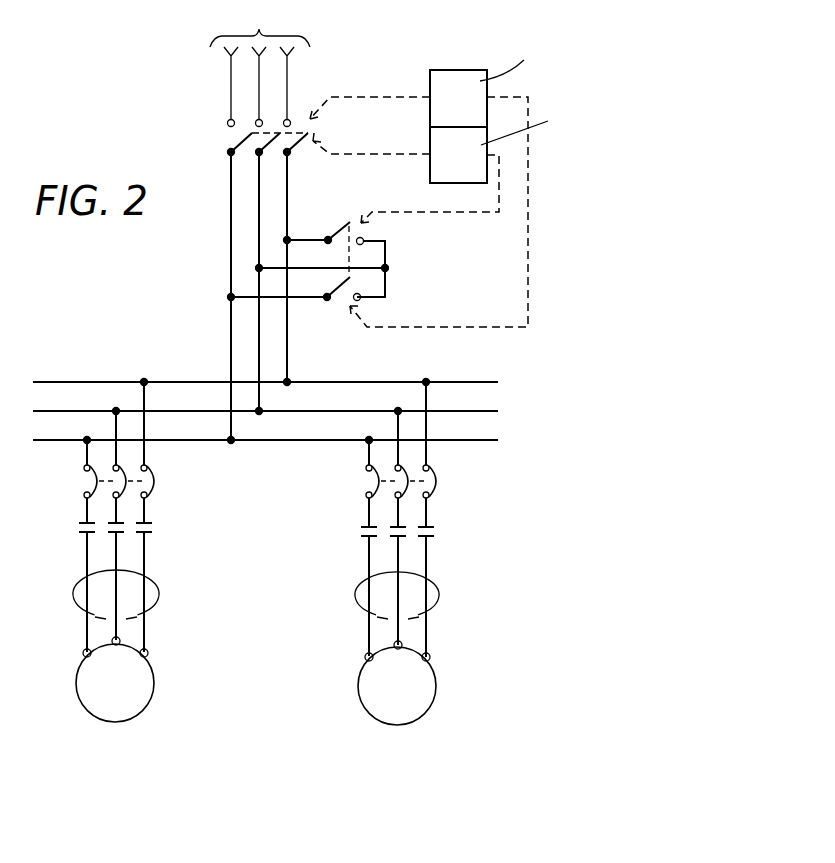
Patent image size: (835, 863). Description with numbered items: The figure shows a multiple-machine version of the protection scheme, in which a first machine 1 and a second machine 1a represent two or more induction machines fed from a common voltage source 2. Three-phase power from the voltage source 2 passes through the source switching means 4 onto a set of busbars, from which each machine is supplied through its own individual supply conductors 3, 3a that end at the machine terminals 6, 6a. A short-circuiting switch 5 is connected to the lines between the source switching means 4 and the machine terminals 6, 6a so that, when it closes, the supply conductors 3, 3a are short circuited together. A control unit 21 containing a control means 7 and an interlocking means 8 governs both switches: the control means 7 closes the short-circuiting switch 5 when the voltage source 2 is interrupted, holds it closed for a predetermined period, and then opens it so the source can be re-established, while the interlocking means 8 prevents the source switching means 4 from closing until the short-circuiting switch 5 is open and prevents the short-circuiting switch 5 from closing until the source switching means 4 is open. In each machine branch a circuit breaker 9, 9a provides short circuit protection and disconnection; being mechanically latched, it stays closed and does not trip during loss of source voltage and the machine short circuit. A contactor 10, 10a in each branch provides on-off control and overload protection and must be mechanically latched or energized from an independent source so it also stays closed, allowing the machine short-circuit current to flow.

The induction machine 1 is at (85, 707).
The second machine 1a is at (378, 718).
The voltage source 2 is at (260, 62).
The supply conductors 3 is at (160, 583).
The supply conductors 3a is at (438, 593).
The source switching means 4 is at (232, 133).
The short-circuiting switch 5 is at (338, 225).
The machine terminals 6 is at (147, 650).
The machine terminals 6a is at (429, 655).
The control means 7 is at (450, 112).
The interlocking means 8 is at (450, 168).
The circuit breaker 9 is at (131, 481).
The circuit breaker 9a is at (421, 481).
The contactor 10 is at (127, 527).
The contactor 10a is at (416, 532).
The control unit 21 is at (458, 91).